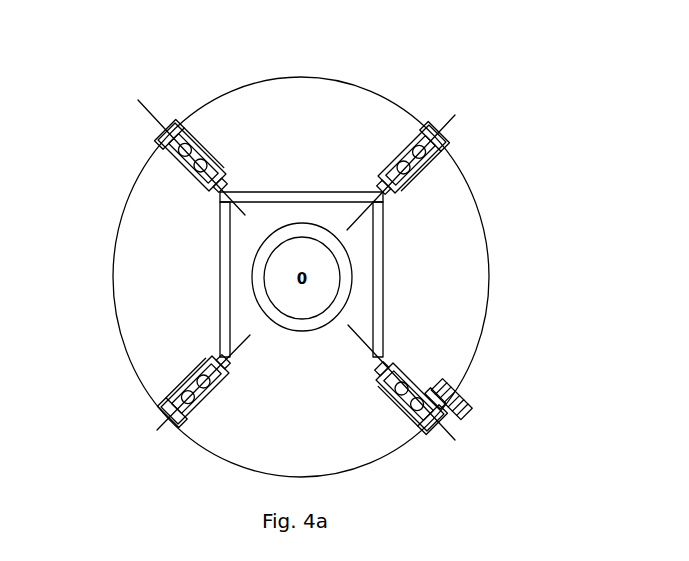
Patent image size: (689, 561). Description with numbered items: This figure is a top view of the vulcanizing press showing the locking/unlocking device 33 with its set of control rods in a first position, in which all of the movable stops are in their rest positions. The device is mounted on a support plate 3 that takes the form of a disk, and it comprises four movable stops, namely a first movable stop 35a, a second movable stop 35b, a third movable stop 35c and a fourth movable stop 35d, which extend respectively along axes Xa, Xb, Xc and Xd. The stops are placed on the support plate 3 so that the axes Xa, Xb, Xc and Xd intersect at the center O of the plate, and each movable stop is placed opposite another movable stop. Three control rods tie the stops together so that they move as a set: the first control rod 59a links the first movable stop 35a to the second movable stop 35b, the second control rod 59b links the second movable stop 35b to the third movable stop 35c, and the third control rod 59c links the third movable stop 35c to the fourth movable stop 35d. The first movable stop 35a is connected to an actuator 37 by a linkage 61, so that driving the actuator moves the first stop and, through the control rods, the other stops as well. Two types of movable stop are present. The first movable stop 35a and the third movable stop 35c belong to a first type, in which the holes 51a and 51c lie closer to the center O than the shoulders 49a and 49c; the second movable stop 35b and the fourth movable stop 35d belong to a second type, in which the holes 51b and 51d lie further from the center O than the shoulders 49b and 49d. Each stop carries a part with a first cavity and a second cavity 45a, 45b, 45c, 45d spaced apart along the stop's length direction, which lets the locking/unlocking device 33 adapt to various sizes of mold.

The support plate 3 is at (492, 269).
The locking/unlocking device 33 is at (293, 231).
The first movable stop 35a is at (411, 418).
The second movable stop 35b is at (465, 147).
The third movable stop 35c is at (134, 112).
The fourth movable stop 35d is at (132, 418).
The actuator 37 is at (468, 400).
The guide carriage 45a is at (369, 412).
The guide carriage 45b is at (475, 173).
The guide carriage 45c is at (128, 134).
The guide carriage 45d is at (124, 385).
The shoulder 49a is at (428, 425).
The shoulder 49b is at (430, 170).
The shoulder 49c is at (177, 132).
The shoulder 49d is at (173, 392).
The hole 51a is at (428, 378).
The hole 51b is at (433, 150).
The hole 51c is at (162, 150).
The hole 51d is at (158, 405).
The first control rod 59a is at (385, 268).
The second control rod 59b is at (275, 190).
The third control rod 59c is at (220, 287).
The linkage 61 is at (447, 392).
The axis Xa is at (410, 394).
The axis Xb is at (419, 161).
The axis Xc is at (181, 144).
The axis Xd is at (183, 382).